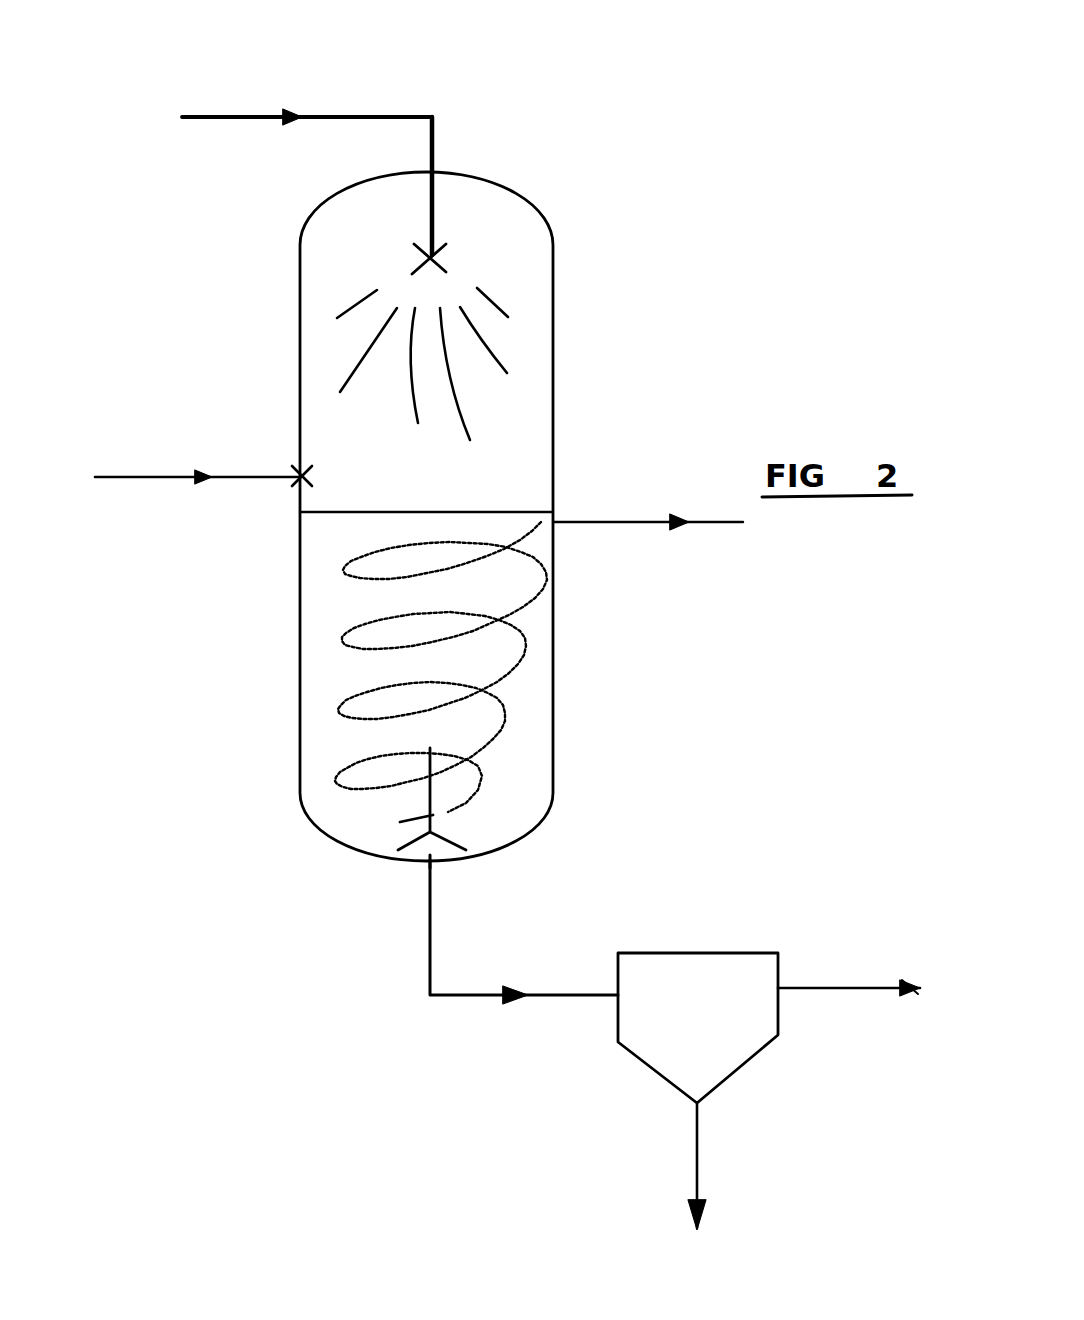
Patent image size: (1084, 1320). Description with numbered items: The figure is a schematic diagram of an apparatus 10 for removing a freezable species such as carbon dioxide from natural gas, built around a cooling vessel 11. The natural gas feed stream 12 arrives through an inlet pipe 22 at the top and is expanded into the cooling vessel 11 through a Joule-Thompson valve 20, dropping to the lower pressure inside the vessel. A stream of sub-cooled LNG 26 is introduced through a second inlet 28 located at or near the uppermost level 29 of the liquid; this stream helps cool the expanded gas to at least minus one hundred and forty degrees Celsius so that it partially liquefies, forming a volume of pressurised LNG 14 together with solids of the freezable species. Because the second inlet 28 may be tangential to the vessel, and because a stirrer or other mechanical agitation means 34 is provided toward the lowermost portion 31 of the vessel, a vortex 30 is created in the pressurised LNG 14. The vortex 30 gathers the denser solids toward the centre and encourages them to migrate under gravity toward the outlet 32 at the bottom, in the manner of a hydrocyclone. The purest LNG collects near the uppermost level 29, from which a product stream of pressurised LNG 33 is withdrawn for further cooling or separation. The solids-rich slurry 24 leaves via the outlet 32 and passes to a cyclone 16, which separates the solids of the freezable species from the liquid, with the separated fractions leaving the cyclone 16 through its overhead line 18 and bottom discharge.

The apparatus 10 is at (765, 292).
The cooling vessel 11 is at (553, 390).
The natural gas feed stream 12 is at (226, 117).
The volume of pressurised LNG 14 is at (318, 748).
The cyclone 16 is at (685, 985).
The separator outlet line 18 is at (858, 983).
The Joule-Thompson valve 20 is at (440, 263).
The inlet pipe 22 is at (437, 172).
The slurry 24 is at (482, 1000).
The sub-cooled LNG stream 26 is at (137, 478).
The second inlet 28 is at (303, 478).
The uppermost level 29 is at (450, 523).
The vortex 30 is at (490, 627).
The lowermost portion 31 is at (495, 812).
The outlet 32 is at (433, 862).
The product stream of pressurised LNG 33 is at (628, 528).
The mechanical agitation means 34 is at (470, 770).